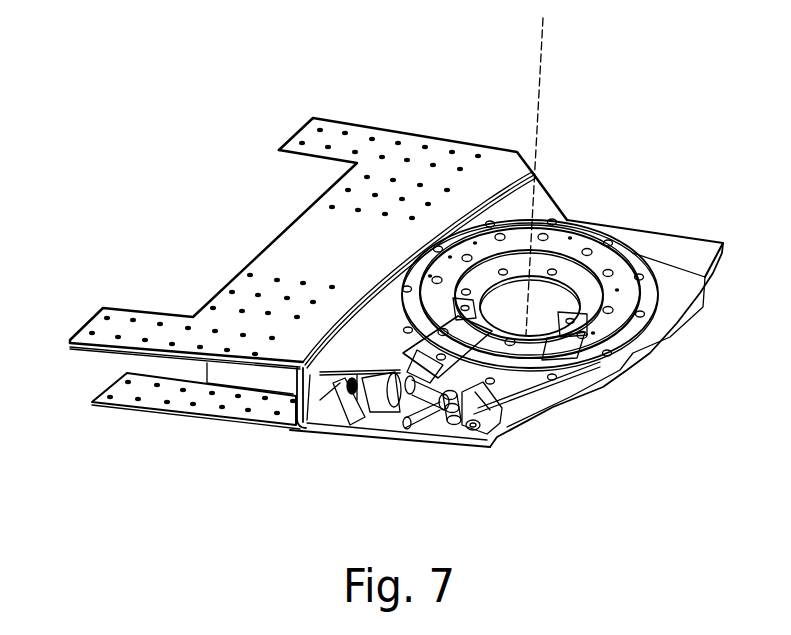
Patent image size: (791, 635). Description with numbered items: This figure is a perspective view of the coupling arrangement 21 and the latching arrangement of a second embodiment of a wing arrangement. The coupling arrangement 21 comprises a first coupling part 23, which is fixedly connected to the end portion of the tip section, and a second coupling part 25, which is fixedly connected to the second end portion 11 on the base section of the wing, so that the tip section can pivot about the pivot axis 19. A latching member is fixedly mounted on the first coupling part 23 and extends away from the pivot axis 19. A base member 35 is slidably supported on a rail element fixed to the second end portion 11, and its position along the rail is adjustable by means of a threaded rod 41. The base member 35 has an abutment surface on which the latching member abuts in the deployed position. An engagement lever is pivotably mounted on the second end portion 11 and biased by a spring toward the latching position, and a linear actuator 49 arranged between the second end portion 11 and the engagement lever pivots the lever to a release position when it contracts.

The second end portion 11 is at (398, 165).
The pivot axis 19 is at (545, 36).
The coupling arrangement 21 is at (553, 190).
The first coupling part 23 is at (562, 242).
The second coupling part 25 is at (632, 257).
The base member 35 is at (392, 367).
The threaded rod 41 is at (333, 393).
The linear actuator 49 is at (398, 420).